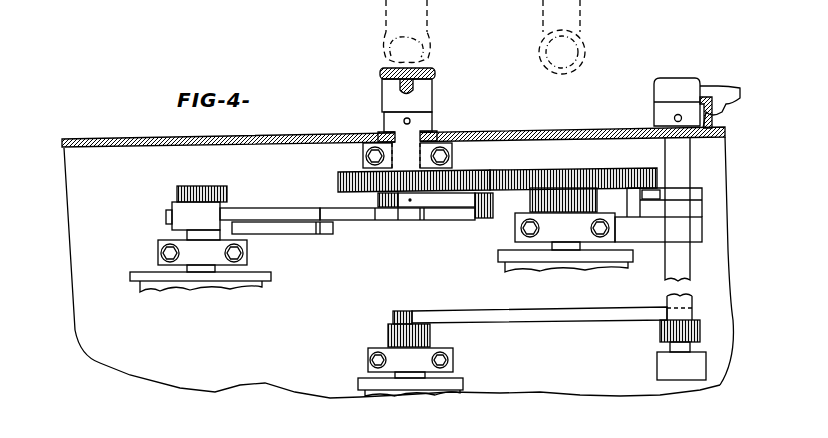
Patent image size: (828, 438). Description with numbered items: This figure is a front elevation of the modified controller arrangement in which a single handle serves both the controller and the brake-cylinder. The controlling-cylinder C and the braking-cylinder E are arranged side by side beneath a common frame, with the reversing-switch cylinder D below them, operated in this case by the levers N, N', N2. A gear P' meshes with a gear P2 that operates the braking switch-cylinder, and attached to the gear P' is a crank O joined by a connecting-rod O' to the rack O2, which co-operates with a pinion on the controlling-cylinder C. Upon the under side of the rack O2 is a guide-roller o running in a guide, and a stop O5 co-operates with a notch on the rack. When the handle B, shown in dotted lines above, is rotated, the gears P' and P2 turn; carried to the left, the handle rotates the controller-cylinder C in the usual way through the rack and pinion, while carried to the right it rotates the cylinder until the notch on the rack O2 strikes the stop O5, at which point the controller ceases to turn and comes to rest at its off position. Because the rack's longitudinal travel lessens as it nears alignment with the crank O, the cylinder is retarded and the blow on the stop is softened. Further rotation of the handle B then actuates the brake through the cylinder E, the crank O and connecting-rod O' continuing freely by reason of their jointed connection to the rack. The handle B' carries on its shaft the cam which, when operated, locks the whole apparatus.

The handle B is at (481, 71).
The handle B' is at (697, 89).
The gear P' is at (414, 169).
The gear P2 is at (558, 168).
The crank O is at (472, 223).
The connecting-rod O' is at (436, 222).
The rack O2 is at (358, 217).
The stop O5 is at (378, 200).
The guide-roller o is at (322, 225).
The controlling-cylinder C is at (183, 286).
The reversing-switch cylinder D is at (452, 383).
The braking-cylinder E is at (522, 268).
The lever N is at (539, 329).
The lever N' is at (663, 350).
The lever N2 is at (432, 338).